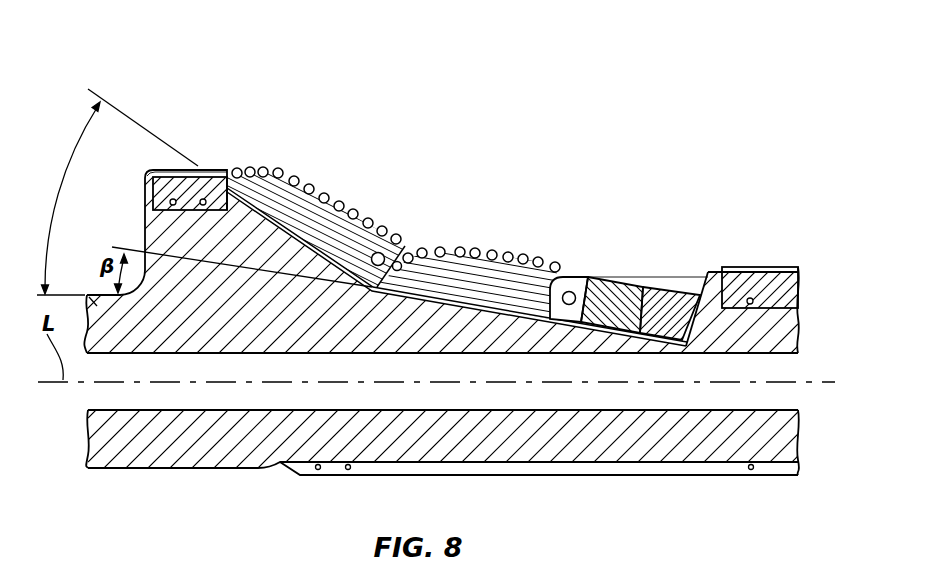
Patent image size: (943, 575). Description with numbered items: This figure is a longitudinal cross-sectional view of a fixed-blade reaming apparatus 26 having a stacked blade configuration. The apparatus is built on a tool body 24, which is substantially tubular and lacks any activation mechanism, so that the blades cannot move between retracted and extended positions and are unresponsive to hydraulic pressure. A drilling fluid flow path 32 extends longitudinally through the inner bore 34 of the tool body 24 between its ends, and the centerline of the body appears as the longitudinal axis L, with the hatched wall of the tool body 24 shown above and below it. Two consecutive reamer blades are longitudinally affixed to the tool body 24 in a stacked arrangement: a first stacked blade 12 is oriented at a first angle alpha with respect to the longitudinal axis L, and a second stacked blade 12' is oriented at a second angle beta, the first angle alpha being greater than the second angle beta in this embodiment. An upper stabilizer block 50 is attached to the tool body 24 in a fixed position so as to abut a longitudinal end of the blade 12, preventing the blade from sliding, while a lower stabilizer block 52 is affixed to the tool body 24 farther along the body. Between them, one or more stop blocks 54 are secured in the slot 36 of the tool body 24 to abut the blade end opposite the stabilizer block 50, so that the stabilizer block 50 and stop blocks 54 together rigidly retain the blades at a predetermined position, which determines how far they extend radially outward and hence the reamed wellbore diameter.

The reamer blade 12 is at (316, 206).
The second stacked blade 12' is at (468, 251).
The tool body 24 is at (98, 307).
The fixed-blade reaming apparatus 26 is at (136, 64).
The drilling fluid flow path 32 is at (792, 393).
The inner bore 34 is at (775, 357).
The slot 36 is at (687, 276).
The upper stabilizer block 50 is at (213, 175).
The lower stabilizer block 52 is at (764, 268).
The stop block 54 is at (663, 298).